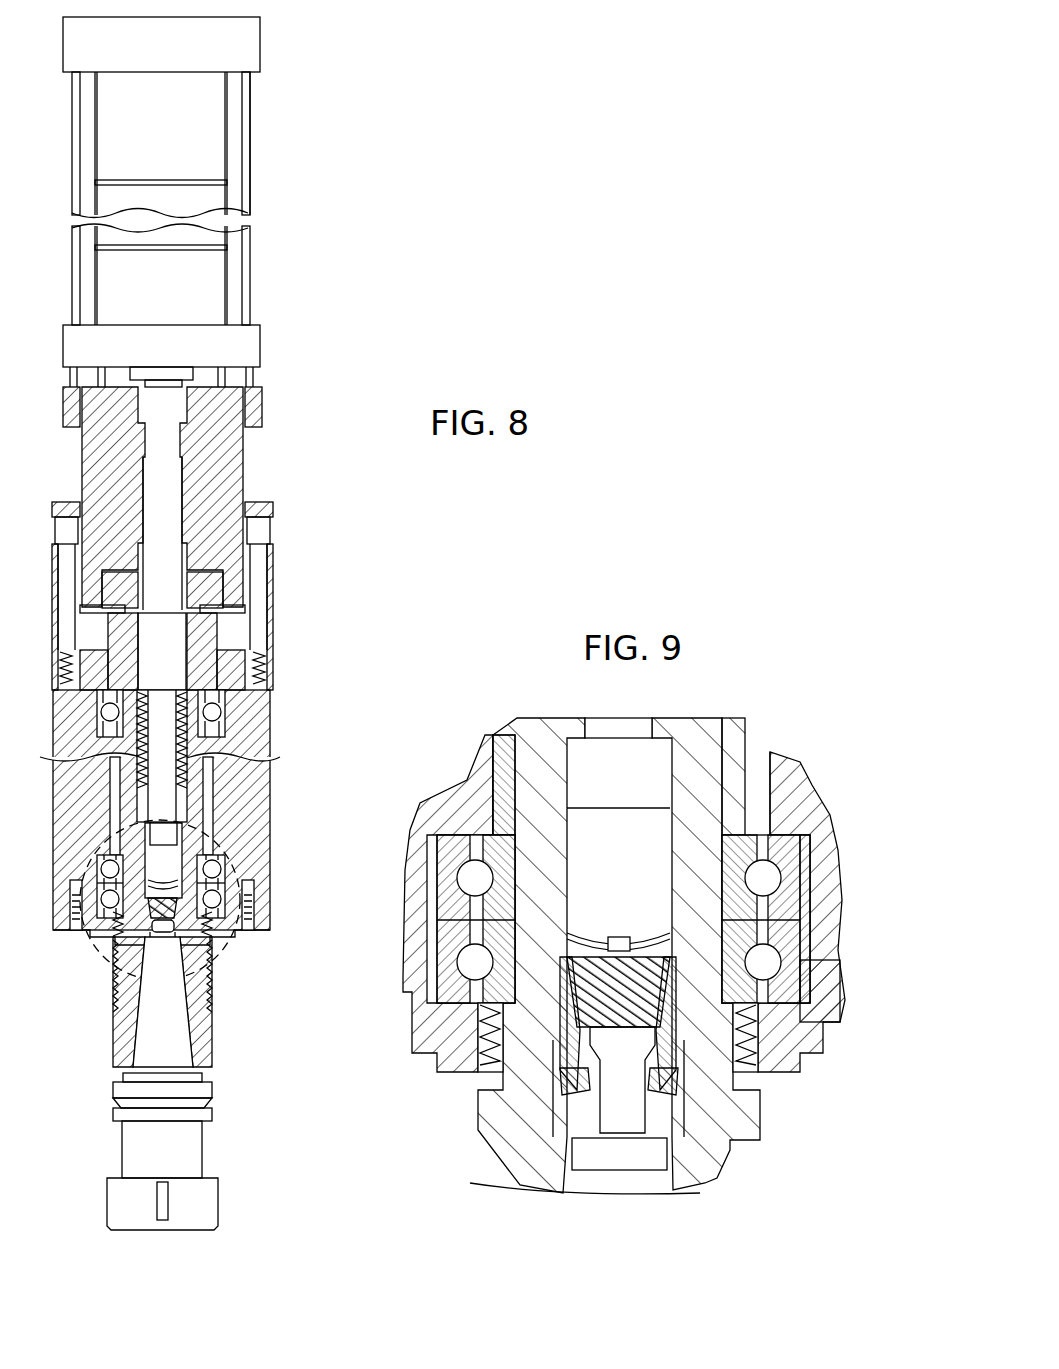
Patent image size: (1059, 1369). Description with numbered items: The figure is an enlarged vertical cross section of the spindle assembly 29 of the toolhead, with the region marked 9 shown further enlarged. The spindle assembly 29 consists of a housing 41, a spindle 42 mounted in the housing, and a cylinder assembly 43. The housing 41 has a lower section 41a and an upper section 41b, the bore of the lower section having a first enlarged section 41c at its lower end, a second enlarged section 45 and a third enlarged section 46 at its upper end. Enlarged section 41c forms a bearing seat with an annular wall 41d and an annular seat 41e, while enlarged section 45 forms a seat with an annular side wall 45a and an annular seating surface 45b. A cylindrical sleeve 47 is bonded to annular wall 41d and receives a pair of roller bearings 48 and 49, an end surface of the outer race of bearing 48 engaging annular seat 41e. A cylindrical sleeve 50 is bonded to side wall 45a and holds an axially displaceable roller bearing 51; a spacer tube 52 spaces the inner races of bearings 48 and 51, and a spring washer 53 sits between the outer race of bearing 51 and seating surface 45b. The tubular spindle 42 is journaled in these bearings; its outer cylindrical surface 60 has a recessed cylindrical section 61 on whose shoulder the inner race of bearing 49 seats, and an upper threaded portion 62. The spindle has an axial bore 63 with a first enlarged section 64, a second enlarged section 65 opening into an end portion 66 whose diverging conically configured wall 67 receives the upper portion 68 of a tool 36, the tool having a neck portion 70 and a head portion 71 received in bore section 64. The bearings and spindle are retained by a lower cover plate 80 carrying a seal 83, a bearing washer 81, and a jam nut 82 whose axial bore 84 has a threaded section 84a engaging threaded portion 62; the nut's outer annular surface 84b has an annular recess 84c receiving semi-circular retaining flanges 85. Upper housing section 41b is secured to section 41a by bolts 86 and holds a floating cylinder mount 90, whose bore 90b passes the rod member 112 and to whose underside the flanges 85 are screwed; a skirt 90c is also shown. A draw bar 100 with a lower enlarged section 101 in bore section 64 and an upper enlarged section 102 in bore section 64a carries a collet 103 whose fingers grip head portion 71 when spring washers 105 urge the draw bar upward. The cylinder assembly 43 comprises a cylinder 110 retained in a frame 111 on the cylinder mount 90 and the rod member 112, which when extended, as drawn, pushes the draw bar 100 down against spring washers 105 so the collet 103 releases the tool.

In FIG. 8, the enlarged view designation 9 is at (95, 960).
In FIG. 8, the spindle assembly 29 is at (292, 318).
In FIG. 8, the tool 36 is at (180, 1153).
In FIG. 9, the tool 36 is at (612, 1188).
In FIG. 8, the housing 41 is at (253, 813).
In FIG. 8, the lower housing section 41a is at (263, 920).
In FIG. 8, the upper housing section 41b is at (210, 840).
In FIG. 9, the upper housing section 41b is at (767, 770).
In FIG. 9, the first enlarged bore section 41c is at (802, 878).
In FIG. 9, the annular wall 41d is at (797, 960).
In FIG. 9, the annular seat 41e is at (806, 835).
In FIG. 8, the spindle 42 is at (163, 860).
In FIG. 8, the cylinder assembly 43 is at (250, 268).
In FIG. 8, the second enlarged bore section 45 is at (228, 722).
In FIG. 8, the annular side wall 45a is at (232, 695).
In FIG. 8, the annular seating surface 45b is at (220, 750).
In FIG. 8, the third enlarged bore section 46 is at (212, 685).
In FIG. 9, the cylindrical sleeve 47 is at (815, 995).
In FIG. 9, the roller bearing 48 is at (795, 898).
In FIG. 9, the roller bearing 49 is at (792, 930).
In FIG. 8, the cylindrical sleeve 50 is at (90, 717).
In FIG. 8, the roller bearing 51 is at (97, 724).
In FIG. 8, the spacer tube 52 is at (122, 847).
In FIG. 9, the spacer tube 52 is at (728, 753).
In FIG. 8, the spring washer 53 is at (100, 787).
In FIG. 8, the outer cylindrical surface 60 is at (205, 945).
In FIG. 8, the recessed cylindrical section 61 is at (120, 930).
In FIG. 8, the upper threaded portion 62 is at (130, 640).
In FIG. 9, the axial bore 63 is at (588, 722).
In FIG. 8, the first enlarged bore section 64 is at (163, 901).
In FIG. 9, the first enlarged bore section 64 is at (573, 821).
In FIG. 8, the upper enlarged bore section 64a is at (120, 780).
In FIG. 9, the second enlarged bore section 65 is at (655, 1087).
In FIG. 9, the end portion 66 is at (566, 1190).
In FIG. 8, the conically configured wall 67 is at (182, 1020).
In FIG. 8, the upper portion of tool 68 is at (178, 1063).
In FIG. 9, the neck portion 70 is at (664, 1140).
In FIG. 9, the head portion 71 is at (624, 1046).
In FIG. 9, the lower cover plate 80 is at (823, 1045).
In FIG. 8, the bearing washer 81 is at (78, 685).
In FIG. 8, the jam nut 82 is at (217, 640).
In FIG. 9, the seal 83 is at (747, 1072).
In FIG. 8, the axial bore 84 is at (140, 613).
In FIG. 8, the enlarged threaded section 84a is at (162, 660).
In FIG. 8, the outer annular surface 84b is at (218, 583).
In FIG. 8, the annular recess 84c is at (222, 617).
In FIG. 8, the retaining flanges 85 is at (97, 613).
In FIG. 8, the bolts 86 is at (262, 526).
In FIG. 8, the floating cylinder mount 90 is at (245, 447).
In FIG. 8, the bore of cylinder mount 90b is at (156, 466).
In FIG. 8, the cylinder skirt 90c is at (104, 580).
In FIG. 8, the draw bar 100 is at (168, 816).
In FIG. 9, the draw bar 100 is at (628, 738).
In FIG. 9, the lower enlarged draw bar section 101 is at (545, 835).
In FIG. 8, the upper enlarged draw bar section 102 is at (172, 655).
In FIG. 9, the collet 103 is at (592, 1098).
In FIG. 8, the spring washers 105 is at (190, 783).
In FIG. 8, the cylinder 110 is at (97, 275).
In FIG. 8, the frame 111 is at (75, 160).
In FIG. 8, the rod member 112 is at (172, 489).